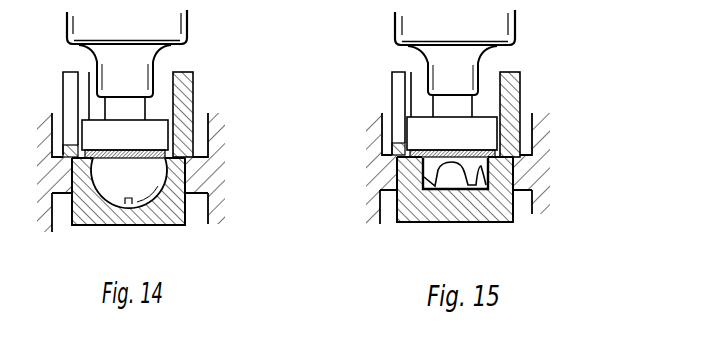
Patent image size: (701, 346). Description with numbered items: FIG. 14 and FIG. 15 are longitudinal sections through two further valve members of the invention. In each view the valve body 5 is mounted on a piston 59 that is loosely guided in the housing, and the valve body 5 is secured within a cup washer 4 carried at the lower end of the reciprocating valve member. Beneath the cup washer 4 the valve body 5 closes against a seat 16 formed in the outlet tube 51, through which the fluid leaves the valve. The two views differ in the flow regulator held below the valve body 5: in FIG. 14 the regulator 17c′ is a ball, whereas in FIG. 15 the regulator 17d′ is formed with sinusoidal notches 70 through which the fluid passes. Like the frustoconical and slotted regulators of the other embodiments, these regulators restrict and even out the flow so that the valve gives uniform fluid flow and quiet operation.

In FIG. 14, the cup washer 4 is at (143, 130).
In FIG. 15, the cup washer 4 is at (453, 125).
In FIG. 14, the valve body 5 is at (145, 150).
In FIG. 15, the valve body 5 is at (472, 150).
In FIG. 14, the nozzle body 16 is at (175, 180).
In FIG. 15, the nozzle body 16 is at (507, 168).
In FIG. 14, the piston 59 is at (137, 77).
In FIG. 15, the piston 59 is at (470, 66).
In FIG. 14, the regulator 17c' is at (129, 212).
In FIG. 15, the spring valve member 17d' is at (519, 174).
In FIG. 15, the sinusoidal notches 70 is at (452, 183).
In FIG. 15, the body insert 51 is at (477, 213).